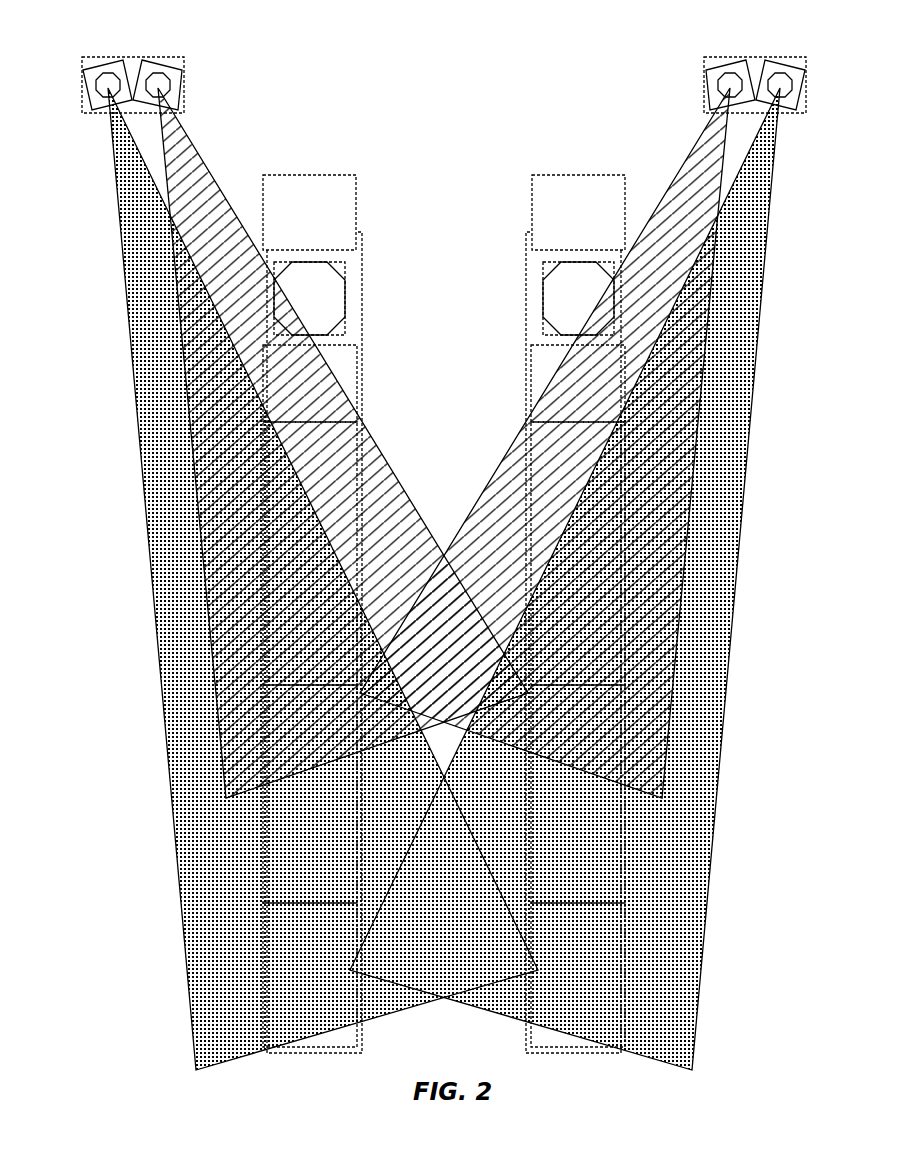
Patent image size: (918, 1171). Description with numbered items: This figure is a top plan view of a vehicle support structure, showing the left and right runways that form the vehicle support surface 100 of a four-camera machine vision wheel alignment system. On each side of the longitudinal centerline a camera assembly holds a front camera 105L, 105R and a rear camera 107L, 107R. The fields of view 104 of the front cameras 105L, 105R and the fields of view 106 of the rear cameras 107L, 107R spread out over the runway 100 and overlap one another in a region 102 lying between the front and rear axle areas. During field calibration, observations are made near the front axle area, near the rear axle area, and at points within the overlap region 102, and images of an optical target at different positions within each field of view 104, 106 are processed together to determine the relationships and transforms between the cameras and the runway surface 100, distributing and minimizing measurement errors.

The vehicle support surface 100 is at (361, 313).
The region 102 is at (232, 622).
The fields of view 104 is at (198, 172).
The front camera 105L is at (150, 62).
The front camera 105R is at (736, 62).
The fields of view 106 is at (190, 928).
The rear camera 107L is at (112, 62).
The rear camera 107R is at (780, 62).